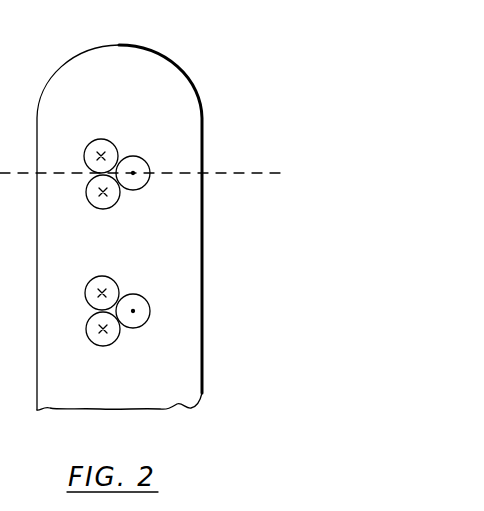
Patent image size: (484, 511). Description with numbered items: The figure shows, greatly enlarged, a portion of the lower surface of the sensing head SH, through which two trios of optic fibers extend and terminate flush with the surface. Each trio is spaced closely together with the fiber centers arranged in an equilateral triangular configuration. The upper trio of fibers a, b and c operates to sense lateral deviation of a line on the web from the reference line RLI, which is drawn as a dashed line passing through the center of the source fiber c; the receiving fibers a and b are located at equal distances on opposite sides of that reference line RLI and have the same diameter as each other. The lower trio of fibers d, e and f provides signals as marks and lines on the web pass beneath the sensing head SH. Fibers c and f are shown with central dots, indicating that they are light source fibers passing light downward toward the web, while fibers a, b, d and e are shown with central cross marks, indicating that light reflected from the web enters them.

The sensing head SH is at (203, 310).
The reference line RLI is at (257, 172).
The receiving optic fiber a is at (90, 144).
The receiving optic fiber b is at (91, 205).
The source optic fiber c is at (144, 160).
The receiving optic fiber d is at (103, 276).
The receiving optic fiber e is at (91, 342).
The source optic fiber f is at (144, 298).